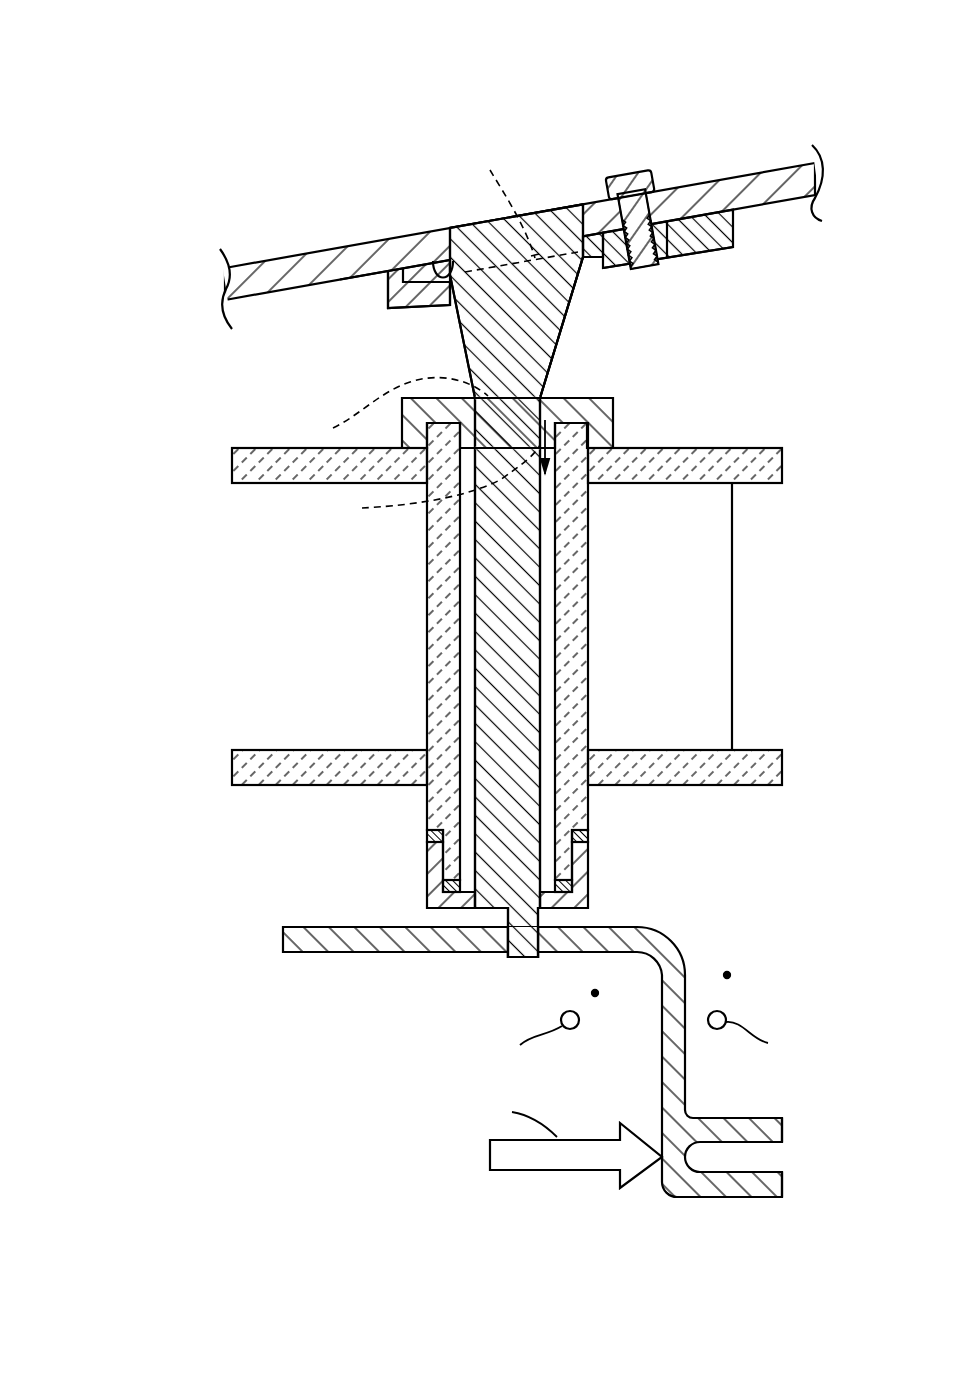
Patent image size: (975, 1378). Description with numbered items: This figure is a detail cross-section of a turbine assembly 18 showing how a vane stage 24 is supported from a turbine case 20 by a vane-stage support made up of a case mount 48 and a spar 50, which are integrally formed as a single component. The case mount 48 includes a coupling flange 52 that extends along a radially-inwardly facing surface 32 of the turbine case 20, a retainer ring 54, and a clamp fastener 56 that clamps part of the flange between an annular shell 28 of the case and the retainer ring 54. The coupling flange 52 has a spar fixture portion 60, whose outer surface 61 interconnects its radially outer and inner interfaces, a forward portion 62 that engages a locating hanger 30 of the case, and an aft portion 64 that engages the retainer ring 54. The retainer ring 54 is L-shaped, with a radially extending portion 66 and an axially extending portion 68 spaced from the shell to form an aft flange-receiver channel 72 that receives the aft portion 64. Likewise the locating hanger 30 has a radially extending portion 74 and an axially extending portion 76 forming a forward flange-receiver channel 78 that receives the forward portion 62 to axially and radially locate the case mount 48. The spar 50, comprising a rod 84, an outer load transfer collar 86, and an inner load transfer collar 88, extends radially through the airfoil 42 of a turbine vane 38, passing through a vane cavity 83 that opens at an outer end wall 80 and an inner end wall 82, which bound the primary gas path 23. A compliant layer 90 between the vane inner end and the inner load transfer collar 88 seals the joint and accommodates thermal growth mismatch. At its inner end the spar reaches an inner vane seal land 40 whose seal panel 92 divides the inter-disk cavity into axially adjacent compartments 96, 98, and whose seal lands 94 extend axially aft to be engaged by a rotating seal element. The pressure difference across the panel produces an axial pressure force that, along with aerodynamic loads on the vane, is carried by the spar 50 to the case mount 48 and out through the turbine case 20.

The turbine assembly 18 is at (95, 97).
The turbine case 20 is at (462, 172).
The primary gas path 23 is at (200, 626).
The vane stage 24 is at (242, 892).
The annular shell 28 is at (554, 187).
The locating hanger 30 is at (390, 253).
The radially-inwardly facing surface 32 is at (436, 282).
The turbine vane 38 is at (800, 625).
The inner vane seal land 40 is at (442, 1043).
The airfoil 42 is at (590, 586).
The case mount 48 is at (290, 378).
The spar 50 is at (360, 387).
The coupling flange 52 is at (628, 345).
The retainer ring 54 is at (792, 269).
The clamp fastener 56 is at (621, 175).
The spar fixture portion 60 is at (450, 350).
The outer surface 61 is at (566, 328).
The forward portion 62 is at (438, 286).
The aft portion 64 is at (610, 266).
The radially extending portion 66 is at (740, 237).
The axially extending portion 68 is at (680, 263).
The aft flange-receiver channel 72 is at (674, 218).
The radially extending portion 74 is at (382, 284).
The axially extending portion 76 is at (398, 309).
The forward flange-receiver channel 78 is at (402, 252).
The outer end wall 80 is at (784, 466).
The inner end wall 82 is at (784, 769).
The vane cavity 83 is at (545, 425).
The rod 84 is at (474, 596).
The outer load transfer collar 86 is at (618, 428).
The inner load transfer collar 88 is at (426, 870).
The compliant layer 90 is at (590, 836).
The seal panel 92 is at (618, 926).
The seal lands 94 is at (800, 1152).
The compartment 96 is at (594, 993).
The compartment 98 is at (728, 975).